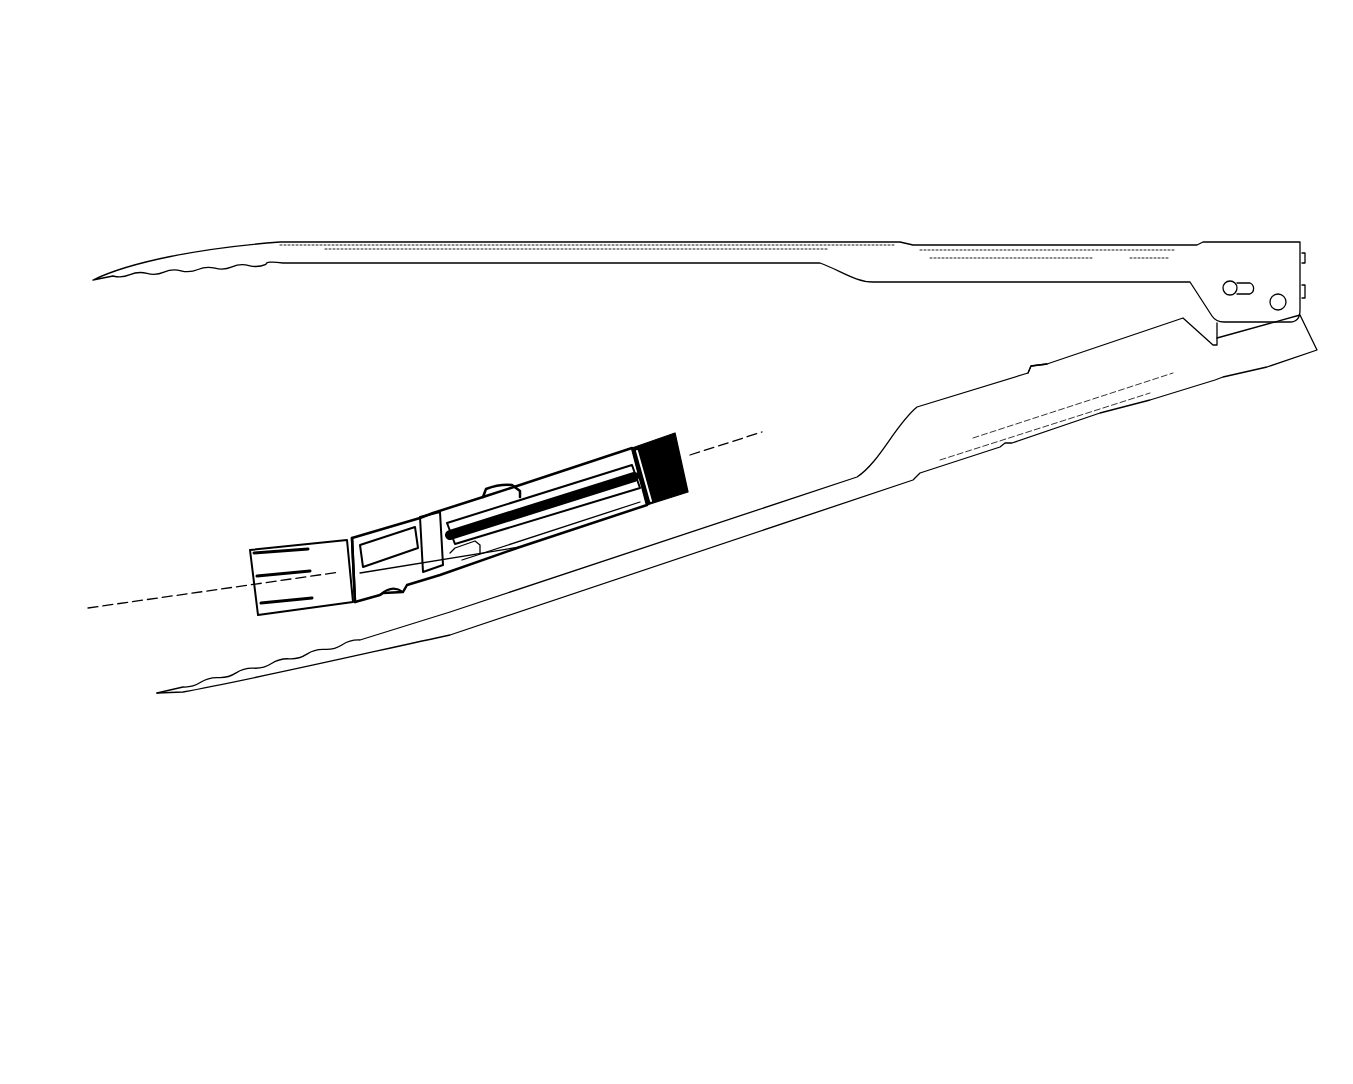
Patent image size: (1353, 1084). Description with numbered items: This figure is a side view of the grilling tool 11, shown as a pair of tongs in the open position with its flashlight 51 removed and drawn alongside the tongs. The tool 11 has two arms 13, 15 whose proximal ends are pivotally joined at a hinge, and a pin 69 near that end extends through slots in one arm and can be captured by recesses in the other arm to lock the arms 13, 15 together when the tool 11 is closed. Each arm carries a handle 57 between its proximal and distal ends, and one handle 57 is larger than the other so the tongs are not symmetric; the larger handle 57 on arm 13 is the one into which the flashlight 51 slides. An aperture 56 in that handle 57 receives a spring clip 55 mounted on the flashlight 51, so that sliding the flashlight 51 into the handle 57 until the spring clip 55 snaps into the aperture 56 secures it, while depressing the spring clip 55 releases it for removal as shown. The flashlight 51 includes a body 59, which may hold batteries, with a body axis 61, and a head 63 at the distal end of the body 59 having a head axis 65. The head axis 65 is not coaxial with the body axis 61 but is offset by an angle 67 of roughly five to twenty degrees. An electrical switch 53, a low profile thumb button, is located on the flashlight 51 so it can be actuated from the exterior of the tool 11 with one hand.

The tool 11 is at (166, 148).
The arm 13 is at (790, 512).
The arm 15 is at (528, 252).
The flashlight 51 is at (388, 460).
The electrical switch 53 is at (388, 595).
The spring clip 55 is at (490, 490).
The aperture 56 is at (1042, 366).
The handle 57 is at (983, 250).
The body 59 is at (583, 472).
The body axis 61 is at (740, 432).
The head 63 is at (253, 607).
The head axis 65 is at (150, 597).
The angle 67 is at (338, 560).
The pin 69 is at (1233, 282).